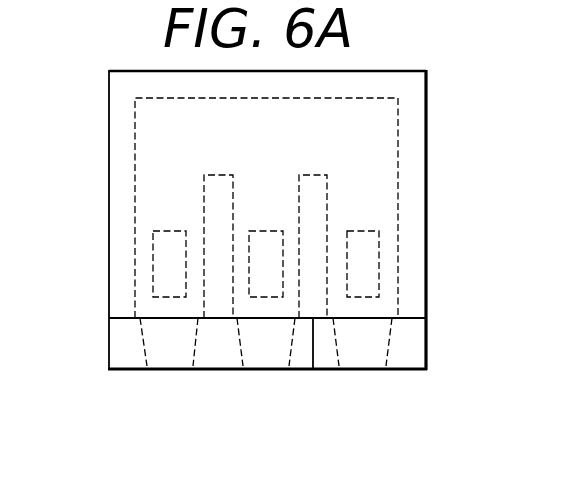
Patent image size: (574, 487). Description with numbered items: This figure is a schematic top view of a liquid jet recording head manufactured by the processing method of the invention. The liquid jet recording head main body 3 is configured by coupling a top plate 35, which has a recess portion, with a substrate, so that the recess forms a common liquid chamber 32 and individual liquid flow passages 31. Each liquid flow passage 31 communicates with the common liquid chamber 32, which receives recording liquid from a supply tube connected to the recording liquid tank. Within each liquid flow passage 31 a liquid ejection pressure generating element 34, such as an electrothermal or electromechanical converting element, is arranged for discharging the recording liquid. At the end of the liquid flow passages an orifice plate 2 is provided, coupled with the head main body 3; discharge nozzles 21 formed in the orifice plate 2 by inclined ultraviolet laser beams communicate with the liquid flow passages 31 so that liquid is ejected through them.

The liquid jet recording head main body 3 is at (433, 82).
The orifice plate 2 is at (415, 342).
The discharge nozzle 21 is at (365, 357).
The common liquid chamber 32 is at (380, 138).
The liquid flow passage 31 is at (380, 213).
The liquid ejection pressure generating element 34 is at (365, 272).
The top plate 35 is at (118, 113).